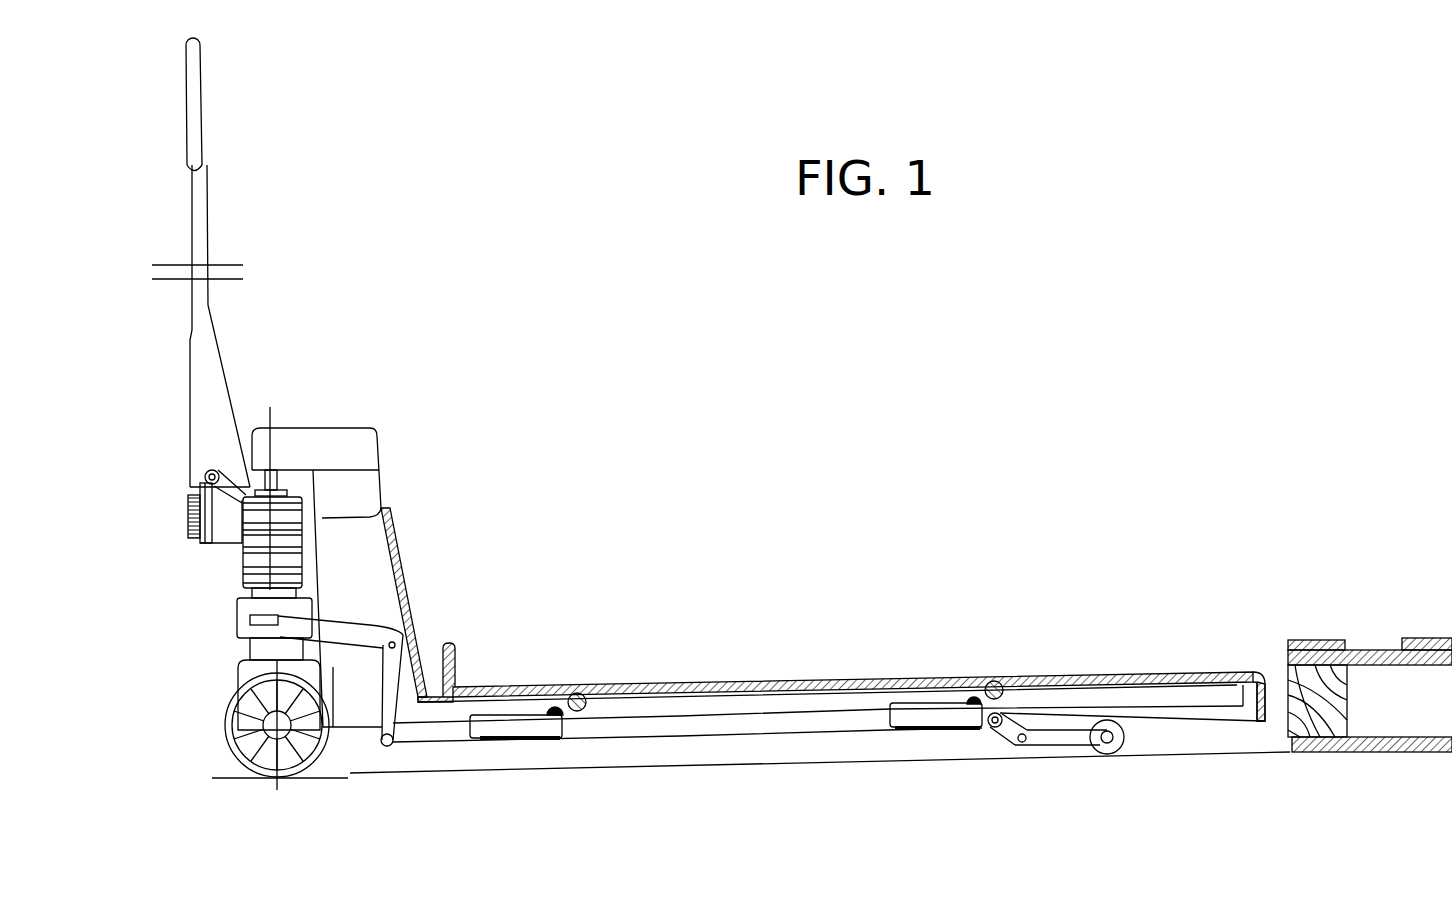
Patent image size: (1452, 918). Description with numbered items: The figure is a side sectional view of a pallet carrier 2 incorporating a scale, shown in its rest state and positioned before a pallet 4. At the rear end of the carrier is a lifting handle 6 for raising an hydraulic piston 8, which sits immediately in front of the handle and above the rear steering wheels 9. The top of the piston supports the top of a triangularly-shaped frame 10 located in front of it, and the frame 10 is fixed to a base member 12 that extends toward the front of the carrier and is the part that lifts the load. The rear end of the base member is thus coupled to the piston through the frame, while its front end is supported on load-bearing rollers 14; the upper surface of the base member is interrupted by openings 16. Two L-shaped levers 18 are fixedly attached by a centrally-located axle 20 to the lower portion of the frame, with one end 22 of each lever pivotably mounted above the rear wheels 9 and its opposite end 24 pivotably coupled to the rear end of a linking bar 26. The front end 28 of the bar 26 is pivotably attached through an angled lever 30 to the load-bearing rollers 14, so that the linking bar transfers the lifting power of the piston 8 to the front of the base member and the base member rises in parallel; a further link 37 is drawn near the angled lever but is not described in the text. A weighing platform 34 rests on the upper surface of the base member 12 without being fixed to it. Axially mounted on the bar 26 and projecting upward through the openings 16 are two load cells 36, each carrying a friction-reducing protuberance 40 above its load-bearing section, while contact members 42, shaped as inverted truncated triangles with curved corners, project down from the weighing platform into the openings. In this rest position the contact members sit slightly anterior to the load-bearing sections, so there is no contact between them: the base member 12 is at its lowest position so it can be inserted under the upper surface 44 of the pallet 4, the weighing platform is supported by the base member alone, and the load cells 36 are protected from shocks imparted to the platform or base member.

The pallet carrier 2 is at (586, 385).
The pallet 4 is at (1433, 637).
The lifting handle 6 is at (200, 115).
The hydraulic piston 8 is at (288, 468).
The rear steering wheels 9 is at (232, 692).
The triangularly-shaped frame 10 is at (372, 492).
The base member 12 is at (853, 677).
The load-bearing rollers 14 is at (1137, 755).
The openings 16 is at (605, 683).
The L-shaped levers 18 is at (353, 632).
The axle 20 is at (419, 620).
The end of lever 22 is at (240, 630).
The opposite end of lever 24 is at (383, 745).
The linking bar 26 is at (687, 727).
The front end of linking bar 28 is at (993, 728).
The angled lever 30 is at (1100, 755).
The weighing platform 34 is at (780, 678).
The load cells 36 is at (540, 728).
The link arm 37 is at (1020, 746).
The friction-reducing protuberance 40 is at (560, 683).
The contact members 42 is at (587, 683).
The upper surface of the pallet 44 is at (1288, 645).